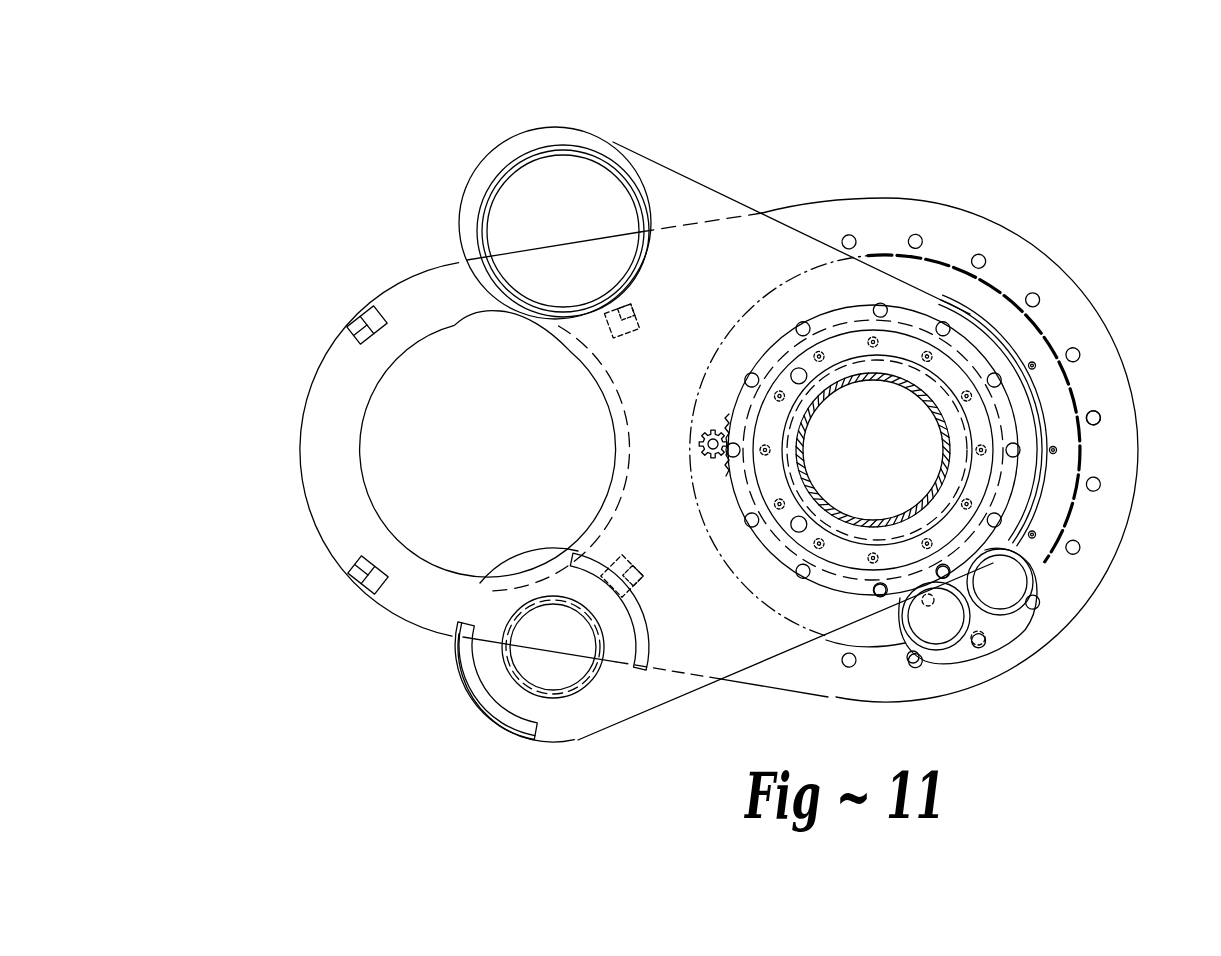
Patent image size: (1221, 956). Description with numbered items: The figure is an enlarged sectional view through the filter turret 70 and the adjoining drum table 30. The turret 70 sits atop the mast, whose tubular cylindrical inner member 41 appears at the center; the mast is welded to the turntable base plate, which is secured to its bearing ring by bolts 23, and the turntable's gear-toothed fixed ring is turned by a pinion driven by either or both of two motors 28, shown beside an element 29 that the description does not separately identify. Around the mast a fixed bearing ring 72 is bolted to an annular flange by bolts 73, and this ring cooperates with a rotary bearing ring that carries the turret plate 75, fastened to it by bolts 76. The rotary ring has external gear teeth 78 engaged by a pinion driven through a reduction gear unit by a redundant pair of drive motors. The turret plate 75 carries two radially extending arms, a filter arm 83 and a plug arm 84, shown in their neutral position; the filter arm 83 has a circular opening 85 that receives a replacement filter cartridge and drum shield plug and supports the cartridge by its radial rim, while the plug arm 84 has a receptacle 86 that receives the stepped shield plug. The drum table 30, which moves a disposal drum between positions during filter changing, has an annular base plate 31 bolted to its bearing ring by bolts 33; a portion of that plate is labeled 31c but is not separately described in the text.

The drum table 30 is at (330, 298).
The annular base plate 31 is at (1058, 306).
The housing side wall 31c is at (336, 500).
The bolts 33 is at (1085, 357).
The bolts 23 is at (1036, 535).
The motors 28 is at (967, 599).
The mounting boss 29 is at (1018, 626).
The inner member 41 is at (800, 448).
The filter turret 70 is at (803, 168).
The fixed bearing ring 72 is at (825, 372).
The bolts 73 is at (976, 450).
The turret plate 75 is at (968, 317).
The bolts 76 is at (1014, 452).
The external gear teeth 78 is at (905, 300).
The filter arm 83 is at (616, 137).
The plug arm 84 is at (618, 718).
The circular opening 85 is at (496, 203).
The receptacle 86 is at (532, 715).